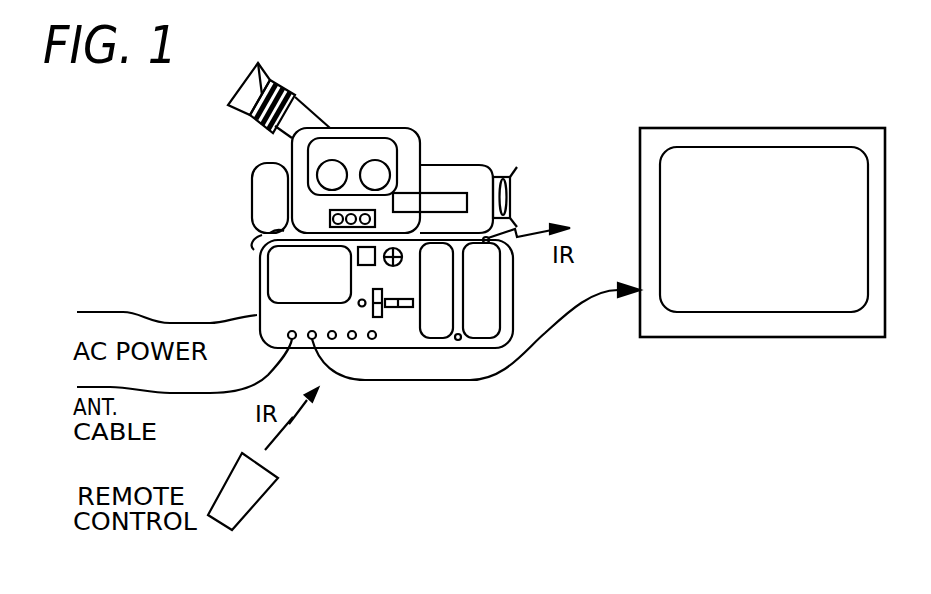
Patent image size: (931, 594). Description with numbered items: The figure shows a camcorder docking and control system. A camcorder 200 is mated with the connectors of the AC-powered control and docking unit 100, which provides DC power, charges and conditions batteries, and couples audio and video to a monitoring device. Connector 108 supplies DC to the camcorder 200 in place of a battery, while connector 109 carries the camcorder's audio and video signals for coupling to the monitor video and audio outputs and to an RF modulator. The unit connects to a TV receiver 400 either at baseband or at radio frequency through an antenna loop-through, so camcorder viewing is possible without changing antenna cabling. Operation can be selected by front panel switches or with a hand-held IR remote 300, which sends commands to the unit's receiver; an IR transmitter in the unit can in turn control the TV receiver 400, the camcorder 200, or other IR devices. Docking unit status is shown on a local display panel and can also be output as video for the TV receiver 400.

The control and docking unit 100 is at (259, 277).
The connector 108 is at (250, 215).
The connector 109 is at (330, 219).
The camcorder 200 is at (280, 153).
The IR remote 300 is at (253, 518).
The TV receiver 400 is at (640, 175).